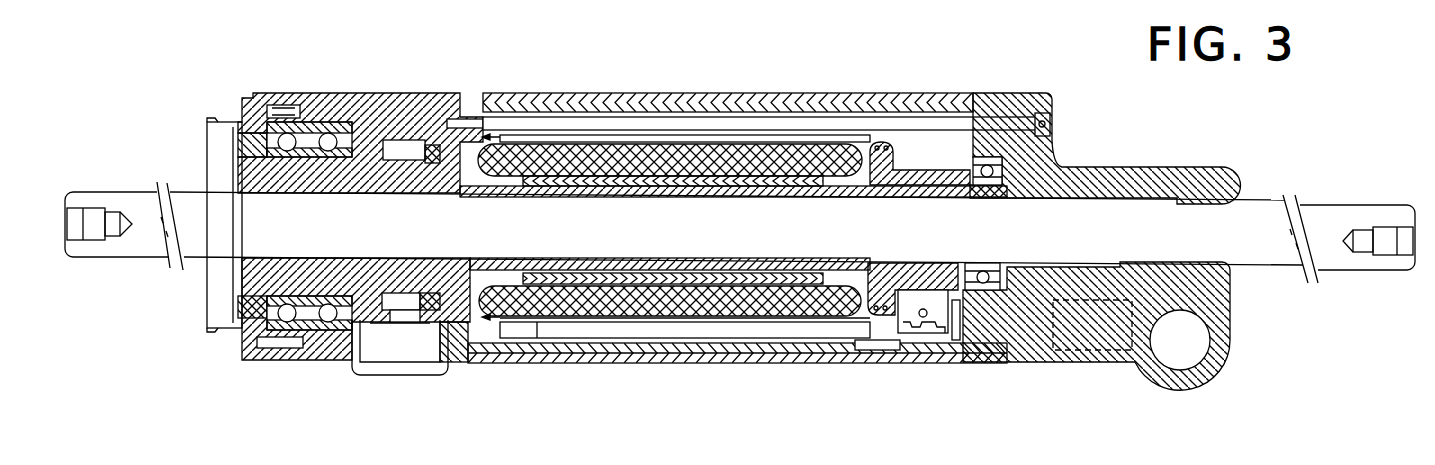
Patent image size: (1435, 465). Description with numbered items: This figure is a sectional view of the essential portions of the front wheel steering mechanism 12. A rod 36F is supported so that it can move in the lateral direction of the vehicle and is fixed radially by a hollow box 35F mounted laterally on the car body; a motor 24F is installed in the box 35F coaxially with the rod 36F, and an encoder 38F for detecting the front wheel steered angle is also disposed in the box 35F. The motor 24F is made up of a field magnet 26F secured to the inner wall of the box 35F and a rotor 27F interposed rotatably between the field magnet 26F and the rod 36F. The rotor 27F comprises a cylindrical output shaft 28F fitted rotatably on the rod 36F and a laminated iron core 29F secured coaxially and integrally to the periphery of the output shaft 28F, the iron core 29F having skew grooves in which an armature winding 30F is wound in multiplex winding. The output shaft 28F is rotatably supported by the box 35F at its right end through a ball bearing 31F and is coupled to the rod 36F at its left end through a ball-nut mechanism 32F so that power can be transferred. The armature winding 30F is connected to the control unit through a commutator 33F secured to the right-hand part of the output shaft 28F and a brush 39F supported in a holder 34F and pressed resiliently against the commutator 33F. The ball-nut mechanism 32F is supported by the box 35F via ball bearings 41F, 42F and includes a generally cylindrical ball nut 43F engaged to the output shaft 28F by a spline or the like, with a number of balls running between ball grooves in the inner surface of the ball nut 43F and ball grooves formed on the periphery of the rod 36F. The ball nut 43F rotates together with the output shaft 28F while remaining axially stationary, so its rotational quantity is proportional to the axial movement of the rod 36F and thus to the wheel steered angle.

The front wheel steering mechanism 12 is at (186, 121).
The motor 24F is at (703, 382).
The field magnet 26F is at (620, 333).
The rotor 27F is at (461, 286).
The output shaft 28F is at (758, 270).
The laminated iron core 29F is at (645, 283).
The armature winding 30F is at (527, 362).
The ball bearing 31F is at (988, 310).
The ball-nut mechanism 32F is at (224, 347).
The commutator 33F is at (915, 265).
The holder 34F is at (938, 333).
The hollow box 35F is at (1070, 170).
The rod 36F is at (1305, 193).
The encoder 38F is at (403, 394).
The brush 39F is at (937, 297).
The ball bearing 41F is at (278, 357).
The ball bearing 42F is at (332, 362).
The ball nut 43F is at (374, 166).